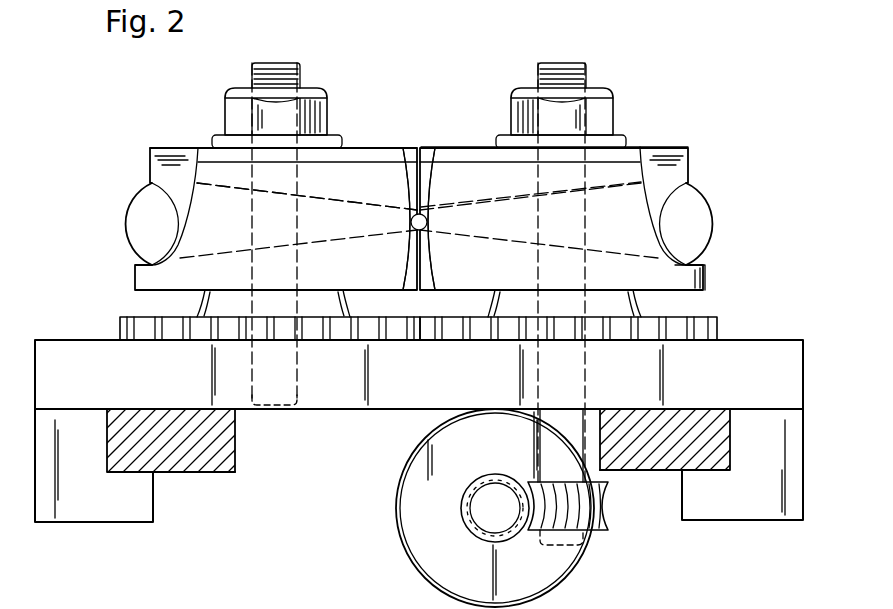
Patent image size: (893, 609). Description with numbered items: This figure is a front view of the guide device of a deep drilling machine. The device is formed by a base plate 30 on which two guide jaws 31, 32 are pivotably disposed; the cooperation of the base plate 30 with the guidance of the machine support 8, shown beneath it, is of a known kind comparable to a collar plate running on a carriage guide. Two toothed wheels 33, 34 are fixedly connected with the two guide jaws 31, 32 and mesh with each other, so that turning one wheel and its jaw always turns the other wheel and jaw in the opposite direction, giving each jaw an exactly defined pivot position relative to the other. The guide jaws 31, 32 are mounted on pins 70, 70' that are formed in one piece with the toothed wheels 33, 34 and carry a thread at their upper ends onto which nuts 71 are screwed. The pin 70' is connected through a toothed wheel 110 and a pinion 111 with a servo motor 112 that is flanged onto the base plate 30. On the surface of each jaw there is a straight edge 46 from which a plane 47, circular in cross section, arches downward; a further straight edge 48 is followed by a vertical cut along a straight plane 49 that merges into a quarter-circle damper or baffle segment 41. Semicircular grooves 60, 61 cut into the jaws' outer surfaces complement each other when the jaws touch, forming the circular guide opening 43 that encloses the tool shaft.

The base plate 30 is at (782, 348).
The machine support 8 is at (195, 455).
The toothed wheel 34 is at (123, 325).
The toothed wheel 33 is at (717, 322).
The guide jaw 32 is at (185, 122).
The guide jaw 31 is at (660, 118).
The straight edge 48 is at (185, 148).
The straight plane 49 is at (170, 208).
The groove 61 is at (172, 200).
The groove 60 is at (670, 195).
The damper or baffle segment 41 is at (675, 256).
The straight edge 46 is at (362, 147).
The plane 47 is at (453, 175).
The guide opening 43 is at (428, 222).
The nut 71 is at (234, 105).
The pin 70 is at (288, 260).
The pin 70' is at (574, 336).
The servo motor 112 is at (413, 488).
The pinion 111 is at (470, 523).
The toothed wheel 110 is at (600, 533).